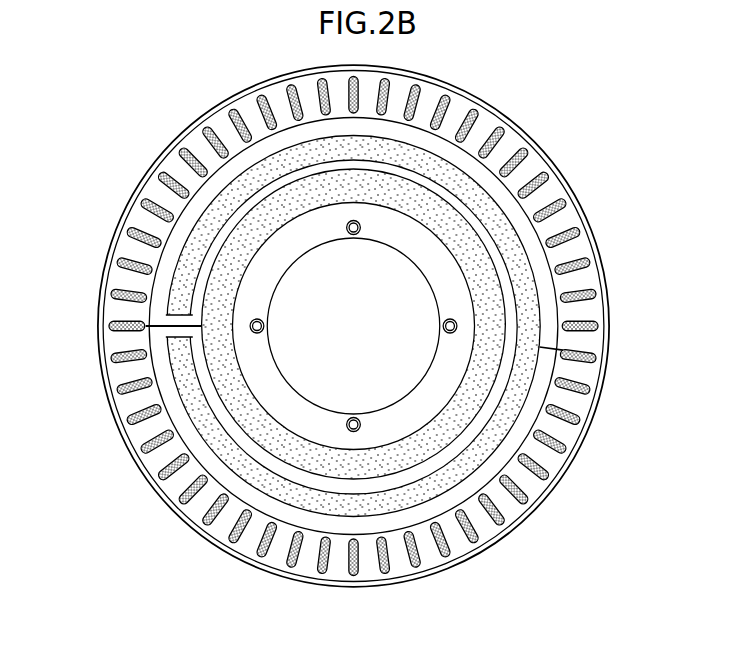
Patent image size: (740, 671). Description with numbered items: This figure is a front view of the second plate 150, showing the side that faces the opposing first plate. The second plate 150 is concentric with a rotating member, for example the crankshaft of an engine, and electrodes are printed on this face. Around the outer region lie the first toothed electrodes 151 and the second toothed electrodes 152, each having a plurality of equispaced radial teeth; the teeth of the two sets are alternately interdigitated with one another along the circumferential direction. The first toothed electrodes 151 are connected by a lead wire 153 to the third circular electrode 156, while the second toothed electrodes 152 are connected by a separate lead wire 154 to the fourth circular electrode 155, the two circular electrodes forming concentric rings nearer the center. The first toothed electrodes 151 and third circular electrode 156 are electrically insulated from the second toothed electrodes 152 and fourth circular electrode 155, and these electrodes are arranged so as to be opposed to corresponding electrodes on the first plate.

The second plate 150 is at (602, 362).
The first toothed electrodes 151 is at (572, 415).
The second toothed electrodes 152 is at (557, 453).
The lead wire 153 is at (557, 352).
The lead wire 154 is at (152, 328).
The fourth circular electrode 155 is at (425, 205).
The third circular electrode 156 is at (480, 203).